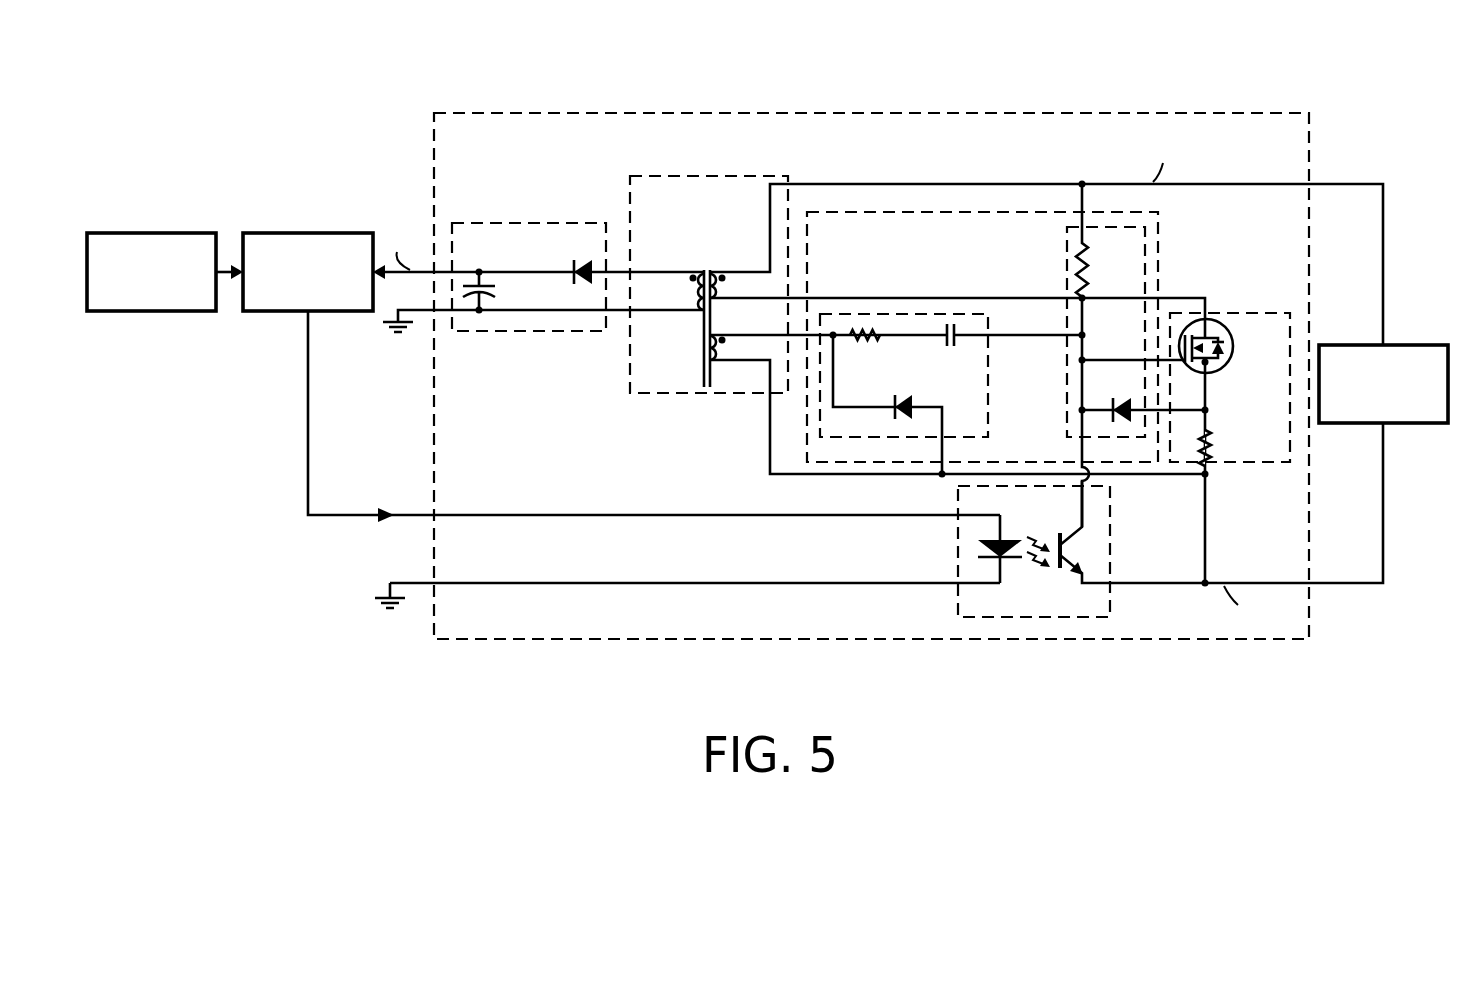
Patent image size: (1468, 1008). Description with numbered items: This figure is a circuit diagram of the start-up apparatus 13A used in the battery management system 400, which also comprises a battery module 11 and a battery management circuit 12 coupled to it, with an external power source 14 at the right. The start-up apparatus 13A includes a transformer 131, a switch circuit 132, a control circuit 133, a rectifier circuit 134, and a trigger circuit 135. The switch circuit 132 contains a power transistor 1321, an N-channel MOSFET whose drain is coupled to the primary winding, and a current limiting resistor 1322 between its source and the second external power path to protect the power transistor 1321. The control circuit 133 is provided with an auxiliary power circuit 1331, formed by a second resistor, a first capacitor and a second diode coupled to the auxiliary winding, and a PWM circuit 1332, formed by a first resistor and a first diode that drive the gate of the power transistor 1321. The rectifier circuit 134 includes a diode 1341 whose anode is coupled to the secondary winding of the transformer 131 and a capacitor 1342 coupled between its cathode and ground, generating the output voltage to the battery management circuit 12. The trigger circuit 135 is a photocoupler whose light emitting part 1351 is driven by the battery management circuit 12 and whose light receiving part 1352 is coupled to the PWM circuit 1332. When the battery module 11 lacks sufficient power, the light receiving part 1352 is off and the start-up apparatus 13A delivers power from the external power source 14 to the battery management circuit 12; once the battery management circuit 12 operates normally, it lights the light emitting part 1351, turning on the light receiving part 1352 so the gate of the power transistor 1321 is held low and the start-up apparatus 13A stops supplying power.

The battery management system 400 is at (293, 96).
The battery module 11 is at (113, 232).
The battery management circuit 12 is at (270, 232).
The start-up apparatus 13A is at (432, 160).
The external power source 14 is at (1415, 345).
The transformer 131 is at (656, 176).
The switch circuit 132 is at (1191, 428).
The control circuit 133 is at (1052, 355).
The rectifier circuit 134 is at (528, 251).
The trigger circuit 135 is at (1130, 529).
The power transistor 1321 is at (1220, 368).
The current limiting resistor 1322 is at (1210, 440).
The auxiliary power circuit 1331 is at (990, 409).
The PWM circuit 1332 is at (1067, 250).
The diode 1341 is at (582, 262).
The capacitor 1342 is at (498, 291).
The light emitting part 1351 is at (1009, 533).
The light receiving part 1352 is at (1073, 568).